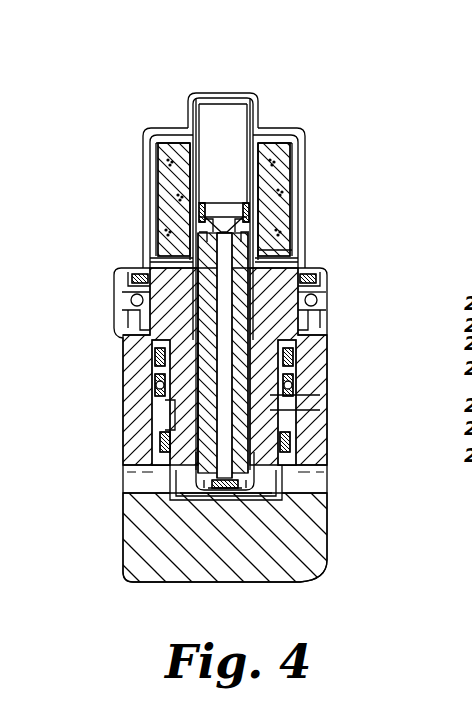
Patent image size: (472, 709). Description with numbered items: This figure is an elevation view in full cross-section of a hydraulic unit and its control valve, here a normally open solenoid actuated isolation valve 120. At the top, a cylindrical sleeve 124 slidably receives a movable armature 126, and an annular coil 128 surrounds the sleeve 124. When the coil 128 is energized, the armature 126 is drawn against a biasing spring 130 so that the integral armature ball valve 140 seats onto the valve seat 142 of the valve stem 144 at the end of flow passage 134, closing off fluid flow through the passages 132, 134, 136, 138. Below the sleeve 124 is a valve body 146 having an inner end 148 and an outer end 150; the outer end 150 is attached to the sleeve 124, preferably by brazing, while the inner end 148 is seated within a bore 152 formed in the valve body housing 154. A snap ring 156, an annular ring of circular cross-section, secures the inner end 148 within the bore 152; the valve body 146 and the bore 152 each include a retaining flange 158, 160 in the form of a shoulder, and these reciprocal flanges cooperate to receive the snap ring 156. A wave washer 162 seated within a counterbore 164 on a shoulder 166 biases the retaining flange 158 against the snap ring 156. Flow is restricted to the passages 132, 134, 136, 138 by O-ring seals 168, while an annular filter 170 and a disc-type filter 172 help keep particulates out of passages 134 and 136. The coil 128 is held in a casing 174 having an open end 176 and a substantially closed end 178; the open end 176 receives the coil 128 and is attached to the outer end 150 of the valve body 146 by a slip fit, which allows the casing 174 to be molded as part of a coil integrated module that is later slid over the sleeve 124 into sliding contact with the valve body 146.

The solenoid actuated isolation valve 120 is at (168, 90).
The cylindrical sleeve 124 is at (238, 93).
The movable armature 126 is at (262, 103).
The annular coil 128 is at (300, 131).
The biasing spring 130 is at (250, 205).
The flow passage 132 is at (140, 500).
The flow passage 134 is at (168, 418).
The flow passage 136 is at (296, 365).
The flow passage 138 is at (296, 392).
The integral armature ball valve 140 is at (200, 205).
The valve seat 142 is at (205, 222).
The valve stem 144 is at (200, 250).
The valve body 146 is at (155, 357).
The inner end of valve body 148 is at (175, 490).
The outer end of valve body 150 is at (290, 256).
The bore 152 is at (131, 300).
The valve body housing 154 is at (135, 404).
The snap ring 156 is at (128, 280).
The retaining flange 158 is at (317, 300).
The retaining flange 160 is at (312, 320).
The wave washer 162 is at (300, 340).
The counterbore 164 is at (322, 282).
The shoulder 166 is at (152, 345).
The O-ring seals 168 is at (155, 384).
The annular filter 170 is at (256, 456).
The disc-type filter 172 is at (272, 486).
The casing 174 is at (300, 150).
The open end of casing 176 is at (300, 268).
The substantially closed end of casing 178 is at (165, 128).